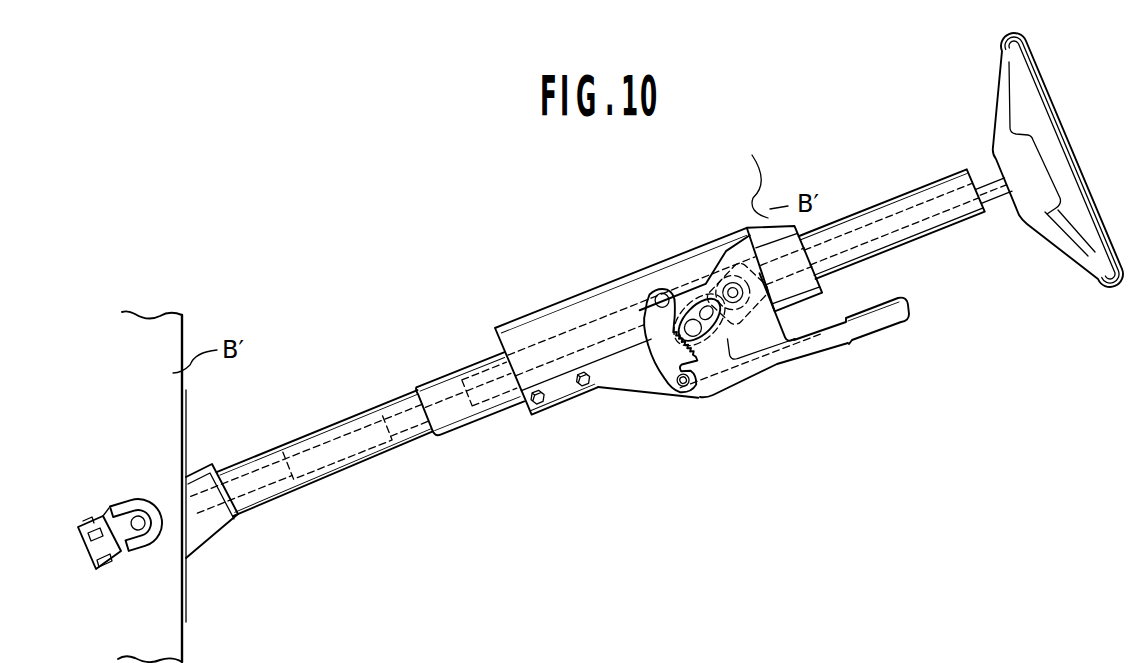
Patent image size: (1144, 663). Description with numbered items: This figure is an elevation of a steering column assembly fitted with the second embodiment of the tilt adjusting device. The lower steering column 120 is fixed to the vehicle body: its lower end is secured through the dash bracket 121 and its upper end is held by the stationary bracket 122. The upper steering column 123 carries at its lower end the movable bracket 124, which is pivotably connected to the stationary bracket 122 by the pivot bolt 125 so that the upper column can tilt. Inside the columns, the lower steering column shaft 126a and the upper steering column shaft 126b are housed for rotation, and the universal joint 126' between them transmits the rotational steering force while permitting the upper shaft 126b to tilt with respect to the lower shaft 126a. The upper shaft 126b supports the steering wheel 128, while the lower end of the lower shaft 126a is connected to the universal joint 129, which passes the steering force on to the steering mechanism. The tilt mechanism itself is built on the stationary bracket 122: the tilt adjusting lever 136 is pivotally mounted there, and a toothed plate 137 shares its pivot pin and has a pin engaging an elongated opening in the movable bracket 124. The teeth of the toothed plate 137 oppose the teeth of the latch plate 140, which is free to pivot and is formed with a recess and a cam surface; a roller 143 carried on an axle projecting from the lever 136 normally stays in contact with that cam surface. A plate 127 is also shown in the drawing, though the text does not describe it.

The lower steering column 120 is at (445, 376).
The dash bracket 121 is at (190, 563).
The stationary bracket 122 is at (566, 308).
The upper steering column 123 is at (912, 192).
The movable bracket 124 is at (808, 303).
The pivot bolt 125 is at (716, 284).
The lower steering column shaft 126a is at (411, 428).
The upper steering column shaft 126b is at (933, 222).
The universal joint 126' is at (560, 406).
The plate 127 is at (757, 303).
The steering wheel 128 is at (1077, 263).
The universal joint 129 is at (147, 555).
The tilt adjusting lever 136 is at (832, 343).
The toothed plate 137 is at (707, 388).
The latch plate 140 is at (646, 352).
The roller 143 is at (674, 394).